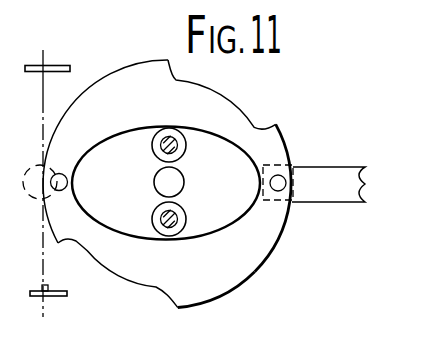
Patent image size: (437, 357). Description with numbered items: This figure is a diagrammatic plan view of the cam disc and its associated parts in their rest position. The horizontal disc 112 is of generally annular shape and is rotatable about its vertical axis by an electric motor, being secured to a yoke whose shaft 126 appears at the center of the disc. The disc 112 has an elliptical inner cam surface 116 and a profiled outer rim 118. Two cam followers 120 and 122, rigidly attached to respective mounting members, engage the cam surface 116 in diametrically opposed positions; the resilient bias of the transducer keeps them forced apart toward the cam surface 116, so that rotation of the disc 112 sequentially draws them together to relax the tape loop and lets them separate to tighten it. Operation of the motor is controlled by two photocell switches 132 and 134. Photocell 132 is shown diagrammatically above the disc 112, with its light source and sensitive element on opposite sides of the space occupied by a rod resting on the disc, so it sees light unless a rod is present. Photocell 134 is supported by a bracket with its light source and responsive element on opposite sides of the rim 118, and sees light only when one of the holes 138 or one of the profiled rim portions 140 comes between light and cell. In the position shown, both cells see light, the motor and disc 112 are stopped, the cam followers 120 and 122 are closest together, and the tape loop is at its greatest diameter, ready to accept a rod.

The disc 112 is at (180, 192).
The elliptical inner cam surface 116 is at (233, 147).
The profiled outer rim 118 is at (214, 300).
The cam follower 120 is at (177, 130).
The cam follower 122 is at (166, 230).
The shaft 126 is at (154, 181).
The photocell switch 132 is at (34, 63).
The photocell switch 134 is at (297, 171).
The holes 138 is at (61, 175).
The profiled rim portions 140 is at (245, 114).